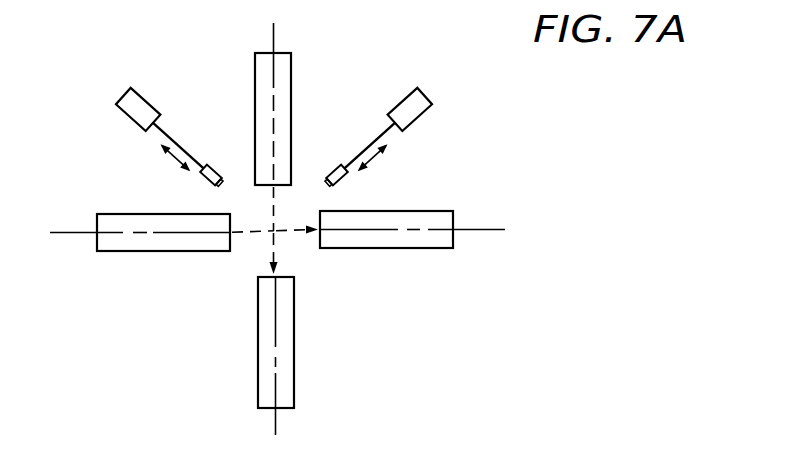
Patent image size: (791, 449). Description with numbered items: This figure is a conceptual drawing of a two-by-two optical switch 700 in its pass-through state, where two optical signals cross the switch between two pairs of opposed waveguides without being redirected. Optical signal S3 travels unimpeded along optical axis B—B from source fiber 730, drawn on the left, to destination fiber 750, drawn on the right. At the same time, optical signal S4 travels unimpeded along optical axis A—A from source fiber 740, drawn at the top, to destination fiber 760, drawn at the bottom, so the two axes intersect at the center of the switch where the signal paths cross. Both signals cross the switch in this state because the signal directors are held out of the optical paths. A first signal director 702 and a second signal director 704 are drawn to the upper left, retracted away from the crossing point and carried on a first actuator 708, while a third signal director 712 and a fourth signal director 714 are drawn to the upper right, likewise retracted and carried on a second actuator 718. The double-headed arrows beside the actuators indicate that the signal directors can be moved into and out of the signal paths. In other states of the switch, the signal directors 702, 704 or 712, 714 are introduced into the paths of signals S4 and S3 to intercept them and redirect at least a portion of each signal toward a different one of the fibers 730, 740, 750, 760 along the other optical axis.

The optical switch 700 is at (624, 92).
The signal director 702 is at (207, 166).
The signal director 704 is at (200, 176).
The first actuator 708 is at (140, 94).
The signal director 712 is at (336, 167).
The signal director 714 is at (352, 183).
The second actuator 718 is at (426, 94).
The source fiber 730 is at (117, 252).
The source fiber 740 is at (292, 85).
The destination fiber 750 is at (410, 248).
The destination fiber 760 is at (295, 372).
The optical signal S3 is at (287, 234).
The optical signal S4 is at (273, 247).